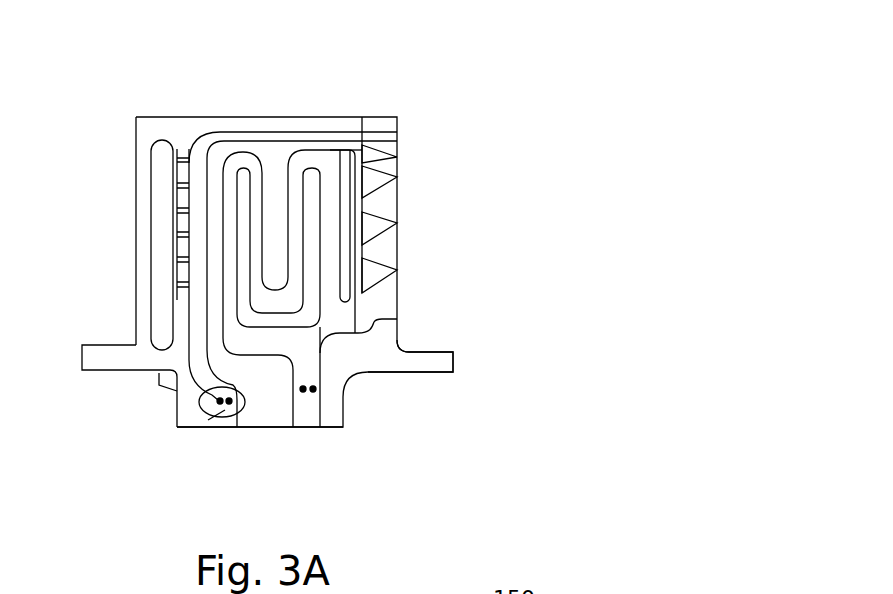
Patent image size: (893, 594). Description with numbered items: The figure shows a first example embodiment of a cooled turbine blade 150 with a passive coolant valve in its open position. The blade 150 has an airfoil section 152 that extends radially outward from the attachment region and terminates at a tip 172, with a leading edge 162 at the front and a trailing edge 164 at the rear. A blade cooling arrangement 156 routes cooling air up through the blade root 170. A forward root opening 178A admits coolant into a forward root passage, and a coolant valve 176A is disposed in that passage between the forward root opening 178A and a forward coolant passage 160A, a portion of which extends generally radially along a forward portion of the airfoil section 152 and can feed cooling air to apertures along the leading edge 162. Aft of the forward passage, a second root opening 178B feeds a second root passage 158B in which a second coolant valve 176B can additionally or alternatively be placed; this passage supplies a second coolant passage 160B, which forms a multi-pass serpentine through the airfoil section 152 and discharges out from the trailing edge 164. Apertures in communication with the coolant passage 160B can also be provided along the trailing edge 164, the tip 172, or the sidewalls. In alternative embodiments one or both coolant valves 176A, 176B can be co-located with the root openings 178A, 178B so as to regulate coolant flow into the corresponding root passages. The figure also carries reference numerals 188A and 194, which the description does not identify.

The blade 150 is at (501, 129).
The airfoil section 152 is at (133, 181).
The blade cooling arrangement 156 is at (262, 373).
The second root passage 158B is at (305, 405).
The forward coolant passage 160A is at (182, 145).
The second coolant passage 160B is at (283, 186).
The leading edge 162 is at (101, 290).
The trailing edge 164 is at (468, 255).
The blade root 170 is at (270, 415).
The tip 172 is at (345, 113).
The coolant valve 176A is at (203, 402).
The coolant valve 176B is at (325, 382).
The forward root opening 178A is at (226, 417).
The second root opening 178B is at (387, 413).
The seal detail 188A is at (212, 412).
The mounting flange 194 is at (398, 418).